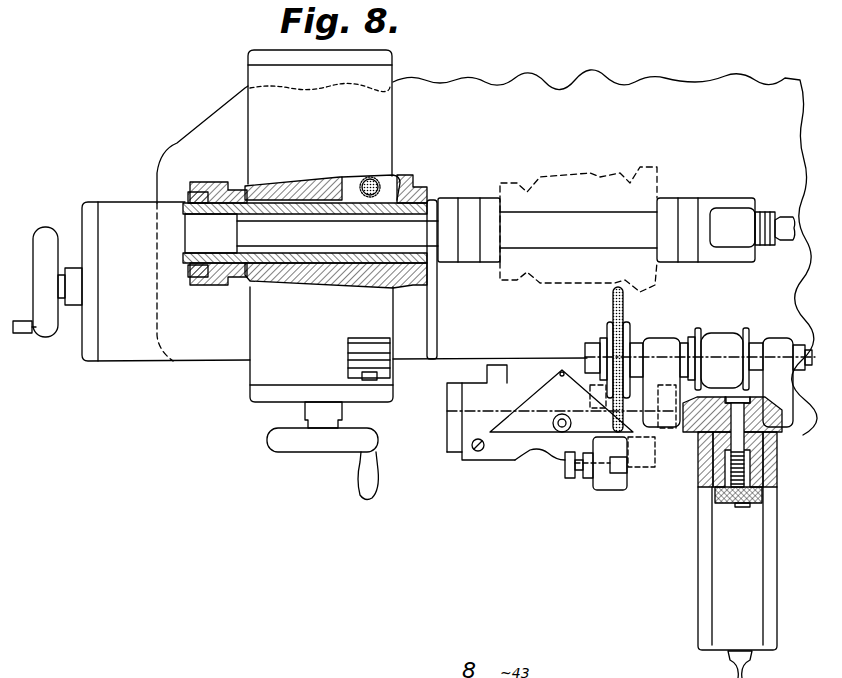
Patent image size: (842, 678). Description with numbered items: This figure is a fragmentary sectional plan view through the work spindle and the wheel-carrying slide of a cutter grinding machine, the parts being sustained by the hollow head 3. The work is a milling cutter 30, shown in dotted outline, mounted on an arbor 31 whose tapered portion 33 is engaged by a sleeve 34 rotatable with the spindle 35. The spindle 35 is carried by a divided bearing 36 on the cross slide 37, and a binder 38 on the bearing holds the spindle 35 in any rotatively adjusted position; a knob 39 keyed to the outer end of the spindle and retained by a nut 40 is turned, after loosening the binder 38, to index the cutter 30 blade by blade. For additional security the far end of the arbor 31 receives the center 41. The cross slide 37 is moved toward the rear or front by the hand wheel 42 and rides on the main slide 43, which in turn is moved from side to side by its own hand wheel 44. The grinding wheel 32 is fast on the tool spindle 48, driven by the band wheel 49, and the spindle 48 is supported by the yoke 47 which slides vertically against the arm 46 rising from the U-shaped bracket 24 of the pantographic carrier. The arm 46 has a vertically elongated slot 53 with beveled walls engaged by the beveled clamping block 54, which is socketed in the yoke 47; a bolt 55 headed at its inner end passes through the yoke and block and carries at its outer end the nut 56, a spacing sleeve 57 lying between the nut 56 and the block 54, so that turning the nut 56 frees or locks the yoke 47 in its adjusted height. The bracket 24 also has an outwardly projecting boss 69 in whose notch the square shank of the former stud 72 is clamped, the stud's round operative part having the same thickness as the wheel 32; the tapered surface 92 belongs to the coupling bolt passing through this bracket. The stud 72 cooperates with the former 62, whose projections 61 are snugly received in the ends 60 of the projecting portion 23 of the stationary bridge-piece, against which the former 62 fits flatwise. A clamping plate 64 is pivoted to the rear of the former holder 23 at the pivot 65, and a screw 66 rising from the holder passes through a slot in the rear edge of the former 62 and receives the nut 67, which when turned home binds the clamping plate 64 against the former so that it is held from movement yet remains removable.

The hollow head 3 is at (173, 145).
The projecting portion of the bridge-piece 23 is at (485, 392).
The bracket 24 is at (697, 587).
The milling cutter 30 is at (620, 160).
The arbor 31 is at (557, 240).
The grinding wheel 32 is at (623, 302).
The tapered portion of the arbor 33 is at (398, 224).
The sleeve 34 is at (350, 292).
The spindle 35 is at (272, 278).
The bearing 36 is at (273, 287).
The cross slide 37 is at (268, 372).
The binder 38 is at (370, 178).
The knob 39 is at (215, 287).
The nut 40 is at (187, 267).
The center 41 is at (783, 213).
The hand wheel 42 is at (312, 440).
The main slide 43 is at (125, 352).
The hand wheel 44 is at (70, 191).
The arm 46 is at (785, 442).
The yoke 47 is at (787, 390).
The tool spindle 48 is at (750, 350).
The band wheel 49 is at (702, 337).
The vertically elongated slot 53 is at (645, 470).
The clamping block 54 is at (700, 483).
The bolt 55 is at (740, 375).
The nut 56 is at (725, 507).
The spacing sleeve 57 is at (775, 480).
The ends of the projecting portion 60 is at (462, 443).
The projections of the former 61 is at (453, 418).
The former 62 is at (507, 455).
The clamping plate 64 is at (525, 423).
The pivot 65 is at (557, 367).
The screw 66 is at (560, 432).
The nut 67 is at (572, 423).
The boss 69 is at (645, 495).
The former stud 72 is at (601, 498).
The tapered portion of the bolt 92 is at (613, 457).